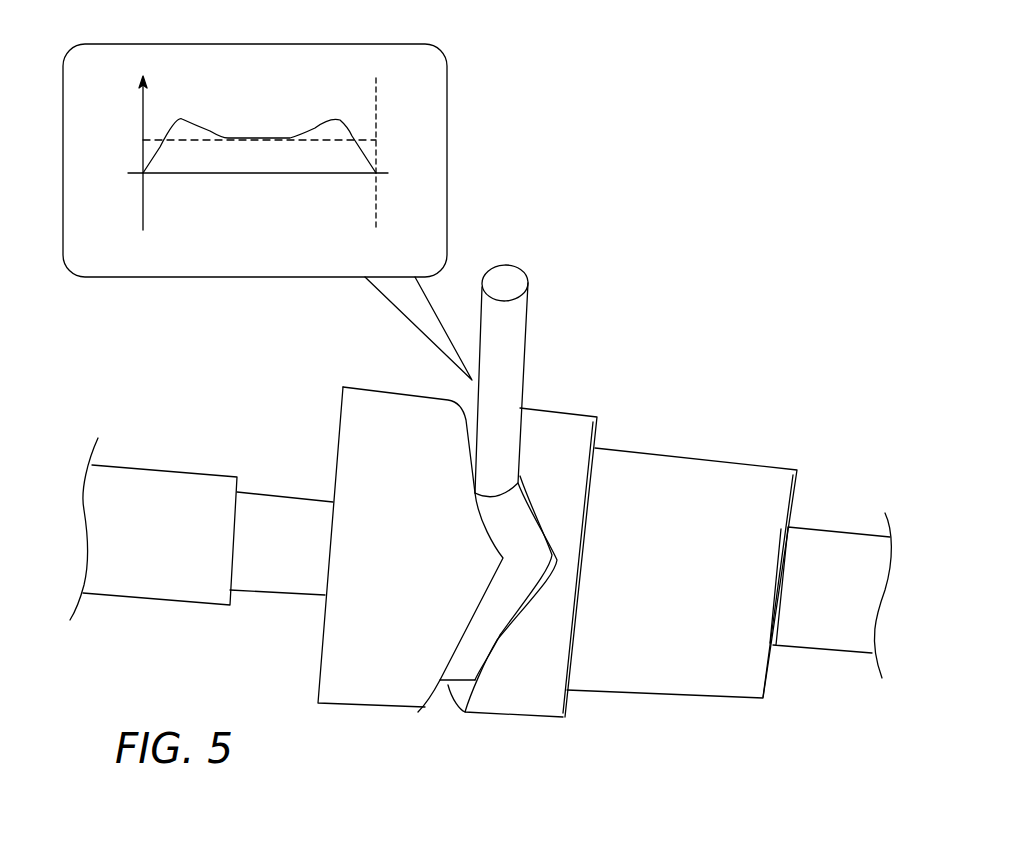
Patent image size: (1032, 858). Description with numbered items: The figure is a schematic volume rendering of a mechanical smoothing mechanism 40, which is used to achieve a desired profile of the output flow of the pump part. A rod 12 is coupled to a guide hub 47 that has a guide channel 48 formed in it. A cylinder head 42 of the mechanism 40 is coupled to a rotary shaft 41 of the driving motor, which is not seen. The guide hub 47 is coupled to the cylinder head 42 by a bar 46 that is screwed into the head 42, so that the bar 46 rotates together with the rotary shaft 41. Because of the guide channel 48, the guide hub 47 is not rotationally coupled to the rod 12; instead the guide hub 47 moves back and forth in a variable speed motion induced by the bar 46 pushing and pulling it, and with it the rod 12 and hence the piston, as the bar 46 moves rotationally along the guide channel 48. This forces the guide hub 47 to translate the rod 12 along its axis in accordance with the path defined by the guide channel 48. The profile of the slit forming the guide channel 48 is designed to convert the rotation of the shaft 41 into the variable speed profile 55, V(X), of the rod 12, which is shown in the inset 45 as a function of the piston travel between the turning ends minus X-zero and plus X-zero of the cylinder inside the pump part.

The rod 12 is at (172, 487).
The mechanical smoothing mechanism 40 is at (778, 327).
The rotary shaft 41 is at (843, 552).
The cylinder head 42 is at (740, 460).
The inset 45 is at (118, 262).
The bar 46 is at (525, 347).
The guide hub 47 is at (337, 450).
The guide channel 48 is at (443, 697).
The variable speed profile 55 is at (197, 124).